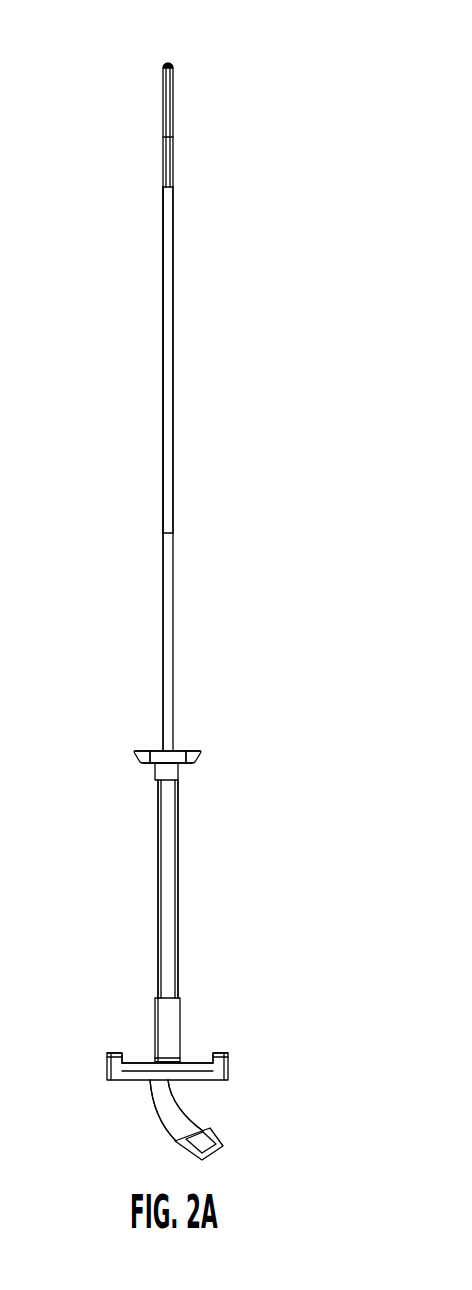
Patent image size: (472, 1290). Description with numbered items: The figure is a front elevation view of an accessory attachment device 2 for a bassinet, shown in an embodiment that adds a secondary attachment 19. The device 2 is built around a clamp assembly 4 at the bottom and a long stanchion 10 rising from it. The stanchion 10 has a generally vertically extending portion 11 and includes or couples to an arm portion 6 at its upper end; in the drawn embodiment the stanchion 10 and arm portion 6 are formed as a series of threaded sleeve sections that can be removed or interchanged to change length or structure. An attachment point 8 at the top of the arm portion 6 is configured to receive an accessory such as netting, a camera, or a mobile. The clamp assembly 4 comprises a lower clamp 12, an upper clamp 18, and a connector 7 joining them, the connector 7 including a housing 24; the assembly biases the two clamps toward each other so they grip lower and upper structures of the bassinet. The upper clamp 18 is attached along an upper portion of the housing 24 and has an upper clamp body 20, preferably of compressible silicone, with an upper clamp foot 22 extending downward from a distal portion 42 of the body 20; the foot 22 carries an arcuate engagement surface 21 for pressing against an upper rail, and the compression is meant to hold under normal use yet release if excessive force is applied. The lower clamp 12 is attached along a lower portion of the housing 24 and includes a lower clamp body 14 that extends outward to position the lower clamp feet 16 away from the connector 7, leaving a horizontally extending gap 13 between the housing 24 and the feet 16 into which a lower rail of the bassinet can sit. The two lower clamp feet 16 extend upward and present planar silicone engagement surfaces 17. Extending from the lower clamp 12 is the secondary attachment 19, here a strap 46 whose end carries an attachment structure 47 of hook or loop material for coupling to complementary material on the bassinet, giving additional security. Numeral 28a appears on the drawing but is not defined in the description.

The accessory attachment device 2 is at (89, 132).
The clamp assembly 4 is at (146, 910).
The arm portion 6 is at (179, 118).
The connector 7 is at (174, 940).
The attachment point 8 is at (173, 70).
The stanchion 10 is at (174, 383).
The vertically extending portion 11 is at (151, 423).
The lower clamp 12 is at (143, 1062).
The gap 13 is at (204, 1054).
The lower clamp body 14 is at (183, 1062).
The lower clamp feet 16 is at (158, 1085).
The engagement surfaces 17 is at (115, 1054).
The upper clamp 18 is at (190, 750).
The secondary attachment 19 is at (172, 1150).
The upper clamp body 20 is at (142, 750).
The engagement surface 21 is at (194, 765).
The upper clamp foot 22 is at (137, 765).
The housing 24 is at (179, 870).
The lower sleeve 28a is at (181, 1015).
The distal portion 42 is at (196, 757).
The strap 46 is at (194, 1117).
The attachment structure 47 is at (208, 1142).